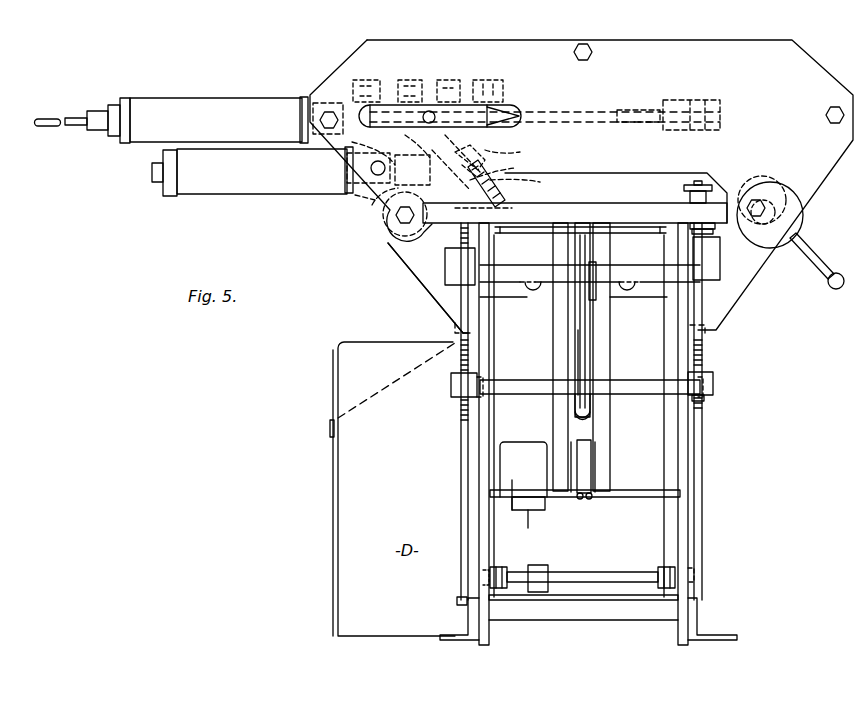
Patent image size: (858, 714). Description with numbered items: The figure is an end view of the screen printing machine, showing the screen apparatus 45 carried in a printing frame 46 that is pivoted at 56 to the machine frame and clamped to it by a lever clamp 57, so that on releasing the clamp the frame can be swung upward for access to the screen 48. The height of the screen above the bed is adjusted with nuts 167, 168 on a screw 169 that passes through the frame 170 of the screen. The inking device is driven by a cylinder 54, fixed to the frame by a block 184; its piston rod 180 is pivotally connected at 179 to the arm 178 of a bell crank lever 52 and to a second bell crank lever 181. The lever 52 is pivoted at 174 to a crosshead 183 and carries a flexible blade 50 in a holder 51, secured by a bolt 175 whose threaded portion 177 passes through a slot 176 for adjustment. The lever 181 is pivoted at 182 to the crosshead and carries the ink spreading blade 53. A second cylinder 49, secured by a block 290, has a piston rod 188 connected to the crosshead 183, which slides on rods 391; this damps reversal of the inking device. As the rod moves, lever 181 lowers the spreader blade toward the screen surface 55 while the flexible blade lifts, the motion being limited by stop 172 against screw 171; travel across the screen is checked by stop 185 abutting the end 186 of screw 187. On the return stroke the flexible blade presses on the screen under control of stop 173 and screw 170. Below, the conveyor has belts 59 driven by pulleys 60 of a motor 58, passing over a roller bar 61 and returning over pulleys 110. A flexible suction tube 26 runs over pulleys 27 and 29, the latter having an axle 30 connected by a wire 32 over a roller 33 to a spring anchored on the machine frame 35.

The screen apparatus 45 is at (797, 48).
The second fluid pressure cylinder 49 is at (213, 106).
The cylinder 54 is at (245, 187).
The block 290 is at (320, 100).
The piston rod 188 is at (340, 98).
The stop 185 is at (512, 106).
The pivot 174 is at (429, 111).
The rods 391 is at (545, 104).
The screw 171 is at (363, 80).
The stop 172 is at (411, 81).
The stop 173 is at (452, 81).
The screw 170 is at (503, 82).
The end of screw 186 is at (612, 110).
The screw 187 is at (703, 93).
The block 184 is at (347, 165).
The crosshead 183 is at (367, 147).
The arm 178 is at (406, 158).
The threaded portion 177 is at (456, 162).
The bell crank lever 52 is at (482, 150).
The bolt 175 is at (515, 142).
The slot 176 is at (508, 162).
The bell crank lever 181 is at (530, 178).
The holder 51 is at (495, 185).
The flexible blade 50 is at (505, 203).
The pivot 182 is at (410, 228).
The printing frame 46 is at (392, 225).
The pivotal connection 179 is at (383, 220).
The piston rod 180 is at (354, 197).
The pivot 56 is at (388, 243).
The ink spreading blade 53 is at (470, 212).
The screen 48 is at (548, 223).
The surface 55 is at (635, 188).
The nut 167 is at (712, 188).
The lever clamp 57 is at (803, 212).
The machine frame 35 is at (690, 570).
The roller bar 61 is at (525, 232).
The nut 168 is at (713, 232).
The screw 169 is at (706, 250).
The pulley 27 is at (588, 258).
The pulleys 110 is at (597, 298).
The flexible tube 26 is at (590, 350).
The conveyor belts 59 is at (612, 430).
The axle 30 is at (535, 390).
The pulley 29 is at (570, 404).
The pulleys 60 is at (585, 498).
The motor 58 is at (530, 475).
The wire 32 is at (500, 558).
The roller 33 is at (515, 556).